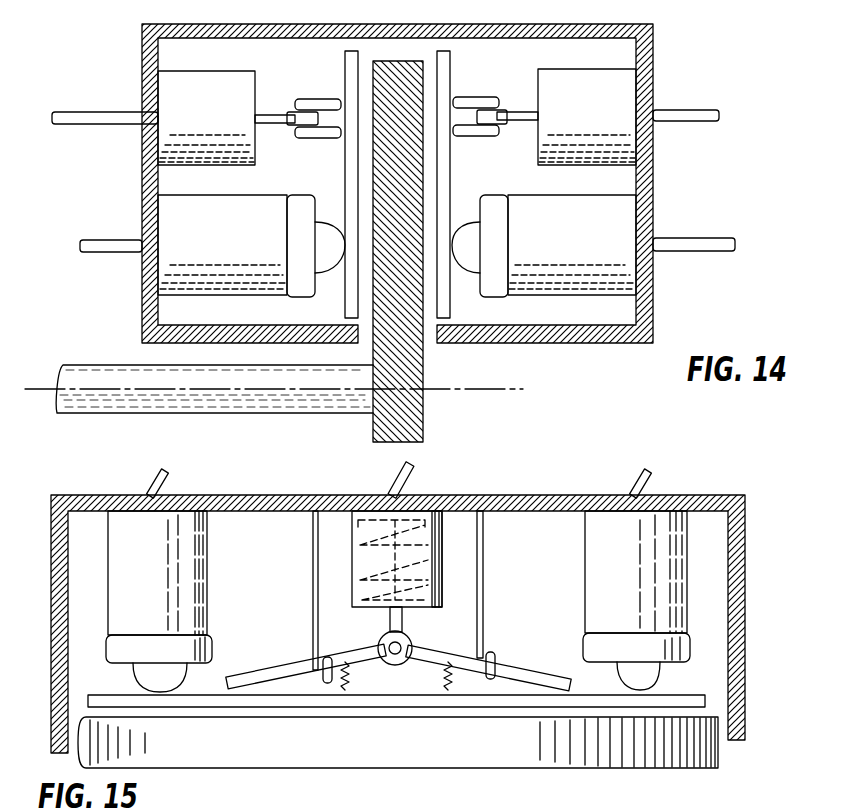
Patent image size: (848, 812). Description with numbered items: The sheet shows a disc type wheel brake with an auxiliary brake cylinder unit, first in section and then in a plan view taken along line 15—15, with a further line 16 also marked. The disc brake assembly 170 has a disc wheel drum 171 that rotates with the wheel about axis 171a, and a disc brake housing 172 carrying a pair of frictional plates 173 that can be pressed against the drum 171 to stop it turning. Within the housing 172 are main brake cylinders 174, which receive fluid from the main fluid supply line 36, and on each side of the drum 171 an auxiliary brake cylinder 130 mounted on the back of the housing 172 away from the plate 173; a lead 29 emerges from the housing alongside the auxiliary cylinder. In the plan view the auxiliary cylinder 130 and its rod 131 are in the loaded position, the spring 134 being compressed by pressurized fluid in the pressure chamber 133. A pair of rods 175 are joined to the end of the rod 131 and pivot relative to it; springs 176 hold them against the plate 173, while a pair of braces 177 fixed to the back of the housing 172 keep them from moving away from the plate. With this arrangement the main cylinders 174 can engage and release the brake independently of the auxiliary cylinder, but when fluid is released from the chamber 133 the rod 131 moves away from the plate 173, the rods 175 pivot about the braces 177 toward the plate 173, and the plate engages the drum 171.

In FIG. 14, the disc brake assembly 170 is at (688, 29).
In FIG. 15, the disc brake assembly 170 is at (603, 456).
In FIG. 14, the disc brake housing 172 is at (655, 68).
In FIG. 15, the disc brake housing 172 is at (745, 573).
In FIG. 14, the auxiliary brake cylinder 130 is at (218, 111).
In FIG. 15, the auxiliary brake cylinder 130 is at (355, 555).
In FIG. 14, the rod 131 is at (262, 114).
In FIG. 15, the rod 131 is at (403, 617).
In FIG. 15, the pressure chamber 133 is at (378, 492).
In FIG. 15, the spring 134 is at (443, 555).
In FIG. 14, the electrical lead 29 is at (97, 125).
In FIG. 15, the electrical lead 29 is at (415, 478).
In FIG. 14, the main fluid supply line 36 is at (125, 253).
In FIG. 15, the main fluid supply line 36 is at (170, 482).
In FIG. 14, the frictional plate 173 is at (345, 72).
In FIG. 15, the frictional plate 173 is at (516, 698).
In FIG. 14, the main brake cylinder 174 is at (230, 238).
In FIG. 15, the main brake cylinder 174 is at (173, 586).
In FIG. 14, the rod 175 is at (327, 138).
In FIG. 15, the rod 175 is at (290, 668).
In FIG. 15, the spring 176 is at (440, 680).
In FIG. 15, the brace 177 is at (313, 576).
In FIG. 14, the disc wheel drum 171 is at (424, 363).
In FIG. 15, the disc wheel drum 171 is at (718, 757).
In FIG. 14, the axis 171a is at (470, 388).
In FIG. 14, the line 15— 15 is at (118, 58).
In FIG. 14, the section line 16 is at (190, 16).